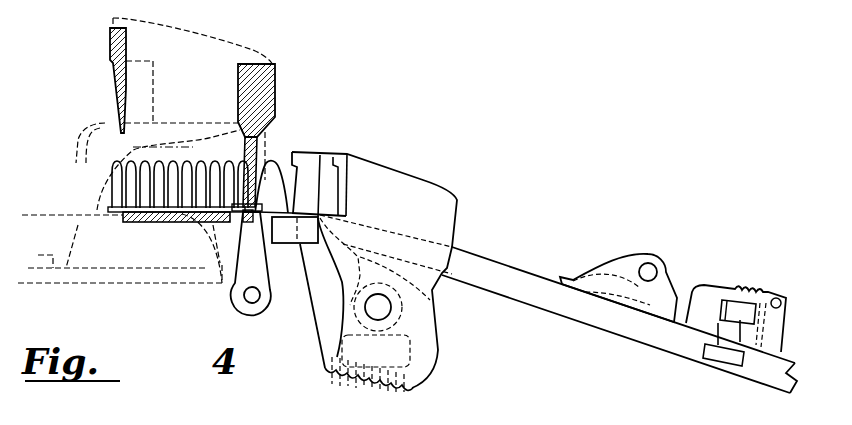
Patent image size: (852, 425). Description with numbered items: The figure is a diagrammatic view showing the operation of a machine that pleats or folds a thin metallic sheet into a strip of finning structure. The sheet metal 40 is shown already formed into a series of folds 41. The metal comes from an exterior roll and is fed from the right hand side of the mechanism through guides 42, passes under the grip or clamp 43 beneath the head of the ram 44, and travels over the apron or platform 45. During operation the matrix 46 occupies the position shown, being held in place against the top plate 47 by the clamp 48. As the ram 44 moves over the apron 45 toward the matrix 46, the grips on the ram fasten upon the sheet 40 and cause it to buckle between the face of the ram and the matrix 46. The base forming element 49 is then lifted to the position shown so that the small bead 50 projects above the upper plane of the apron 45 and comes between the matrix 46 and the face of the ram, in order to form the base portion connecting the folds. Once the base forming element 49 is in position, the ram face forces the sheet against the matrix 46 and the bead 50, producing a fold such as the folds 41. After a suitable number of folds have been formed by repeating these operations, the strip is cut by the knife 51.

The sheet metal 40 is at (270, 168).
The folds 41 is at (115, 170).
The guides 42 is at (709, 292).
The grip or clamp 43 is at (598, 267).
The ram 44 is at (315, 157).
The apron or platform 45 is at (286, 236).
The matrix 46 is at (261, 150).
The top plate 47 is at (168, 222).
The clamp 48 is at (278, 81).
The base forming element 49 is at (236, 294).
The small bead 50 is at (256, 225).
The knife 51 is at (108, 48).